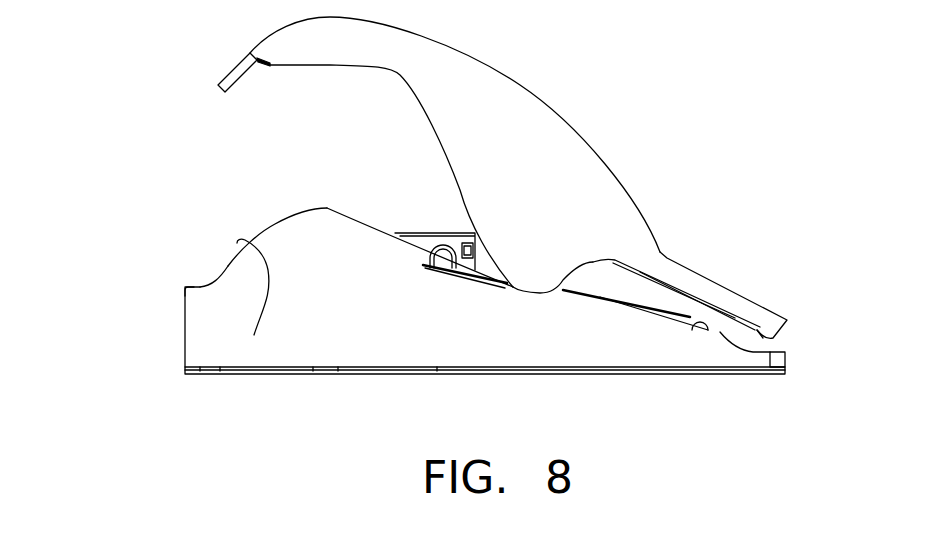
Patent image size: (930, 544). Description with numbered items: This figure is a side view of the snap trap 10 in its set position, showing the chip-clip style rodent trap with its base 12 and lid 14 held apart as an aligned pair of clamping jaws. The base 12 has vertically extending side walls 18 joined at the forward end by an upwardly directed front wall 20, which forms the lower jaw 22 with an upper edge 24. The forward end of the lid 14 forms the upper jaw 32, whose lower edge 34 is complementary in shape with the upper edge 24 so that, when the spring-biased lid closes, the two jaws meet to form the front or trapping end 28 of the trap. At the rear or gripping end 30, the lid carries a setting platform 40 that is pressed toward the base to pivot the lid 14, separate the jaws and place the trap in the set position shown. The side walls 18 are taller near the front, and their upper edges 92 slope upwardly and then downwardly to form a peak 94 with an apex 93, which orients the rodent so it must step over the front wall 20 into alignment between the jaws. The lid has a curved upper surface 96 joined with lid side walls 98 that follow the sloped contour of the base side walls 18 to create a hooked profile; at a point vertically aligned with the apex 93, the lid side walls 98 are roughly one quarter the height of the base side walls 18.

The snap trap 10 is at (663, 92).
The base 12 is at (718, 375).
The lid 14 is at (641, 209).
The side walls 18 is at (455, 357).
The front wall 20 is at (188, 312).
The lower jaw 22 is at (185, 268).
The upper edge 24 is at (200, 287).
The front end 28 is at (125, 371).
The rear end 30 is at (820, 331).
The upper jaw 32 is at (222, 72).
The lower edge 34 is at (242, 88).
The setting platform 40 is at (732, 284).
The upper edges 92 is at (254, 335).
The apex 93 is at (323, 207).
The peak 94 is at (348, 203).
The curved upper surface 96 is at (505, 72).
The lid side walls 98 is at (541, 123).